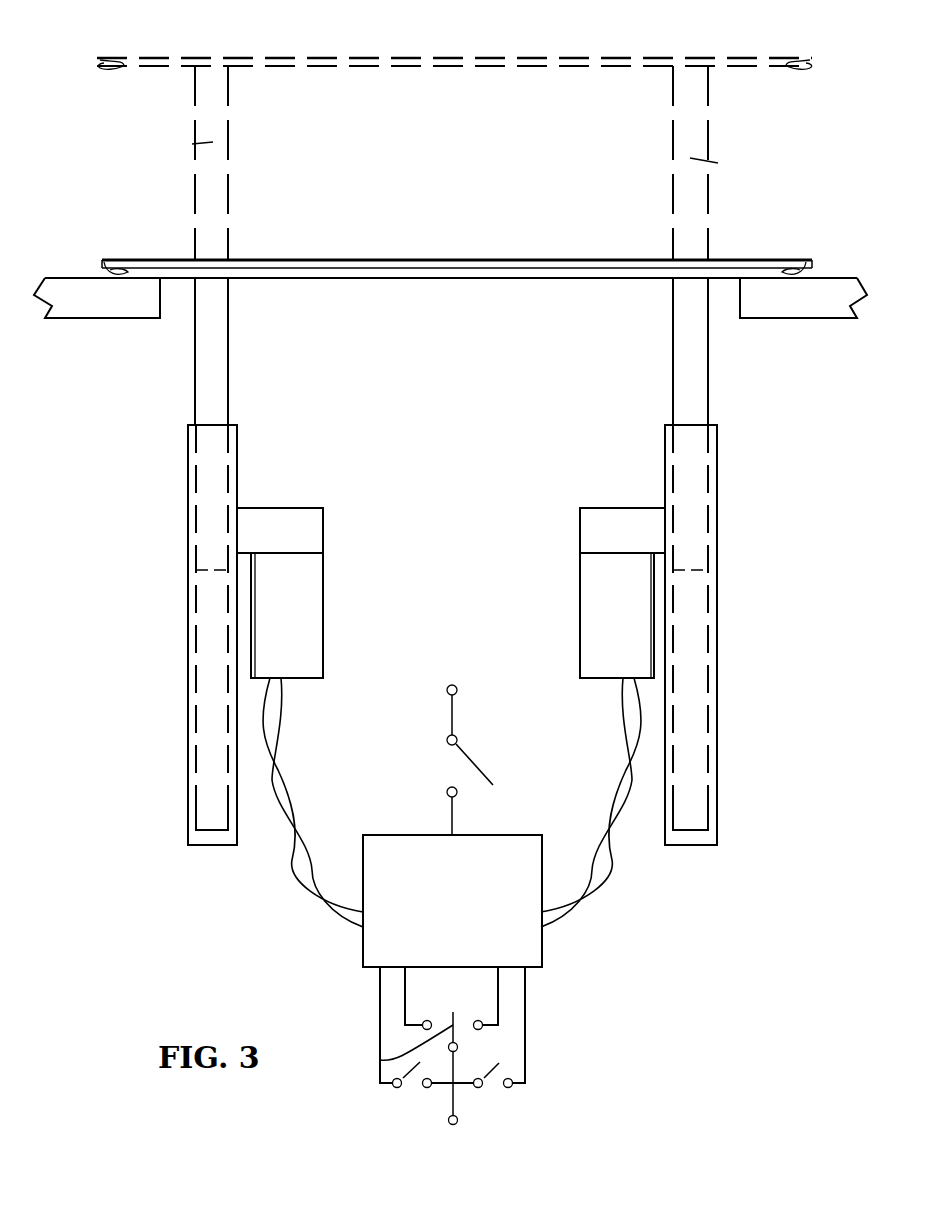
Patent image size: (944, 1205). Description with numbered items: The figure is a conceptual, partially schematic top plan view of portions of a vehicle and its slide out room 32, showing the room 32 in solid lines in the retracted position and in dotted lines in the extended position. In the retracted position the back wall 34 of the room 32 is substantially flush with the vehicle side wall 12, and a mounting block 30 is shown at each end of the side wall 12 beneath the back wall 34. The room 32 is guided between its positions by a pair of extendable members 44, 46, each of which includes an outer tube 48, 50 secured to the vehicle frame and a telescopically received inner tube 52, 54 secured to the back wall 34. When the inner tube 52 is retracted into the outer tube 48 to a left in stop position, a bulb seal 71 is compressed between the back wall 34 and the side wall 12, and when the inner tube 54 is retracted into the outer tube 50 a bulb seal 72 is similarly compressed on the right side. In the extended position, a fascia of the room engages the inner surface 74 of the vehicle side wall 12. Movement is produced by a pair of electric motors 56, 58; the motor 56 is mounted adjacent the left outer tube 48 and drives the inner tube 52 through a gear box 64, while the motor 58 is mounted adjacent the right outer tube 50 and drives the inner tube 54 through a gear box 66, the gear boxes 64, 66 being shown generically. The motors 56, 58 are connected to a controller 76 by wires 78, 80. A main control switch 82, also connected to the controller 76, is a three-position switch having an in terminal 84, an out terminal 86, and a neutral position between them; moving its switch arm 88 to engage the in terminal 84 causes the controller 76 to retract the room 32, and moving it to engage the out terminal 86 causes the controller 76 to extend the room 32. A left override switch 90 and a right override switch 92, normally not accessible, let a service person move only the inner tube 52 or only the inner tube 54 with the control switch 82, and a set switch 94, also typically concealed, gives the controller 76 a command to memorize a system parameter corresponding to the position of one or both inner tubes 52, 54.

The vehicle side wall 12 is at (62, 290).
The mounting block 30 is at (162, 304).
The slide out room 32 is at (560, 258).
The back wall 34 is at (410, 58).
The extendable member 44 is at (172, 473).
The extendable member 46 is at (720, 470).
The outer tube 48 is at (188, 590).
The outer tube 50 is at (717, 543).
The inner tube 52 is at (180, 142).
The inner tube 54 is at (732, 163).
The electric motor 56 is at (297, 607).
The electric motor 58 is at (593, 598).
The gear box 64 is at (300, 528).
The gear box 66 is at (625, 527).
The bulb seal 71 is at (88, 78).
The bulb seal 72 is at (790, 76).
The inner surface 74 is at (110, 322).
The controller 76 is at (467, 909).
The wires 78 is at (287, 798).
The wires 80 is at (592, 816).
The main control switch 82 is at (467, 1050).
The in terminal 84 is at (421, 1023).
The out terminal 86 is at (480, 1022).
The switch arm 88 is at (380, 1060).
The left override switch 90 is at (412, 1090).
The right override switch 92 is at (493, 1092).
The set switch 94 is at (485, 745).